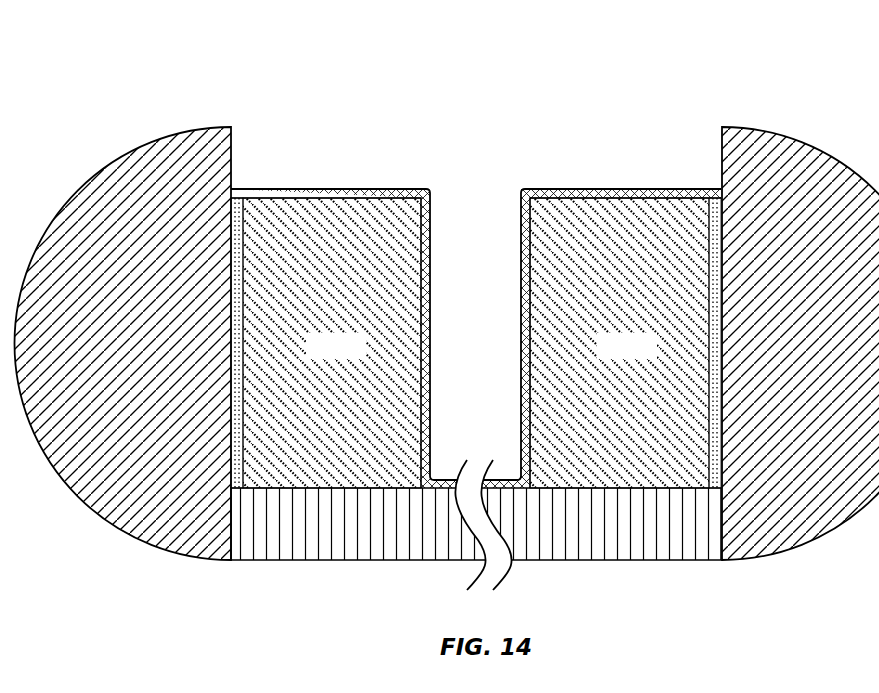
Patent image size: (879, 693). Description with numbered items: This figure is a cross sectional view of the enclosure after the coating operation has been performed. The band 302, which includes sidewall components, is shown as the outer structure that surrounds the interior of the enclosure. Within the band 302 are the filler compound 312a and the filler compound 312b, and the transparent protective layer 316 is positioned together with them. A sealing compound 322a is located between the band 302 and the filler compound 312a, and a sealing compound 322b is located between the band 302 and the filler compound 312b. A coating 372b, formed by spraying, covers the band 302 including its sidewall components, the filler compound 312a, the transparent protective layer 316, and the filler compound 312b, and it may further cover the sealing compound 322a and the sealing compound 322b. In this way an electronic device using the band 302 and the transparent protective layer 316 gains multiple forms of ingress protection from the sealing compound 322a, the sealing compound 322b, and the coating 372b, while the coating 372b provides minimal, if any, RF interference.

The band 302 is at (74, 112).
The filler compound 312a is at (332, 343).
The filler compound 312b is at (619, 343).
The transparent protective layer 316 is at (335, 560).
The sealing compound 322a is at (233, 191).
The sealing compound 322b is at (718, 188).
The coating 372b is at (368, 190).